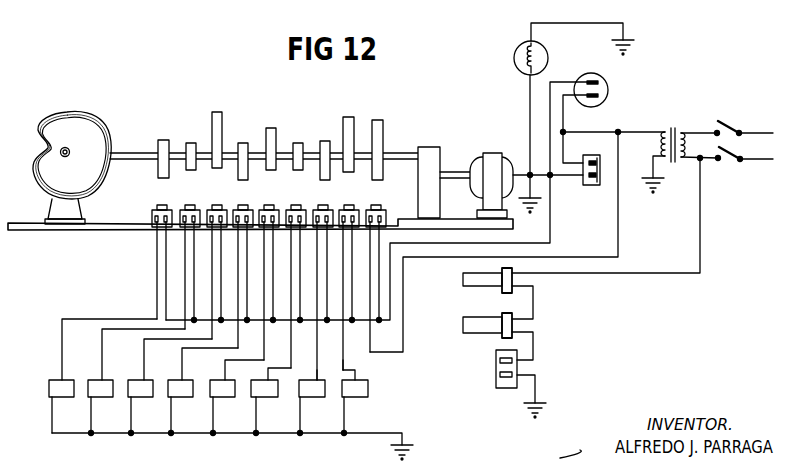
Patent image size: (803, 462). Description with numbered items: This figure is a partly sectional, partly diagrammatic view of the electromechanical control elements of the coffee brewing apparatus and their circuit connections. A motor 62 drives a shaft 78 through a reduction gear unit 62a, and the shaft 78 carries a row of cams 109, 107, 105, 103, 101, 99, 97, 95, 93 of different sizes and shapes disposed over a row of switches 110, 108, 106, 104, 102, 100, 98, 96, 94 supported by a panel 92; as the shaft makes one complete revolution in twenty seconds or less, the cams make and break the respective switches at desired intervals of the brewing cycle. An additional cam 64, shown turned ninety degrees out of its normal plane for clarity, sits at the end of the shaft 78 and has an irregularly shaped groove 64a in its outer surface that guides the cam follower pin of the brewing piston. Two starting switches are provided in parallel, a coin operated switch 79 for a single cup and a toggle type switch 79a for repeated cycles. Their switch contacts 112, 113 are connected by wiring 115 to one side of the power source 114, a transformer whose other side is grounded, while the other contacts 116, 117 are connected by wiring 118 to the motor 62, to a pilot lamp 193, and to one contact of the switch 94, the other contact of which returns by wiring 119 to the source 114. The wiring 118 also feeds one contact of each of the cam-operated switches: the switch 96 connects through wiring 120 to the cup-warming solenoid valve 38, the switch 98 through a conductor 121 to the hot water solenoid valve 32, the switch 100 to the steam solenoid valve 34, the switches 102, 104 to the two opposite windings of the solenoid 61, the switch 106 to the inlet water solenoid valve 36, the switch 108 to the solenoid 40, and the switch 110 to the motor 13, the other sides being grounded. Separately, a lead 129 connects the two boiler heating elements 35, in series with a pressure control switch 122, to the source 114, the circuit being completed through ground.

The cam 64 is at (53, 128).
The irregularly shaped groove 64a is at (95, 132).
The shaft 78 is at (398, 157).
The panel 92 is at (20, 229).
The cam 109 is at (164, 140).
The cam 107 is at (199, 122).
The cam 105 is at (217, 112).
The cam 103 is at (245, 143).
The cam 101 is at (273, 128).
The cam 99 is at (297, 143).
The cam 97 is at (325, 141).
The cam 95 is at (348, 117).
The cam 93 is at (378, 122).
The switch 110 is at (163, 205).
The switch 108 is at (189, 205).
The switch 106 is at (213, 205).
The switch 104 is at (243, 205).
The switch 102 is at (270, 205).
The switch 100 is at (297, 205).
The switch 98 is at (323, 205).
The switch 96 is at (348, 205).
The switch 94 is at (375, 207).
The reduction gear unit 62a is at (430, 152).
The motor 62 is at (492, 160).
The pilot lamp 193 is at (547, 53).
The wiring 118 is at (550, 77).
The contact 116 is at (599, 80).
The switch 79 is at (608, 87).
The switch contact 112 is at (600, 97).
The wiring 115 is at (622, 129).
The power source 114 is at (672, 127).
The switch contact 113 is at (600, 150).
The contact 117 is at (588, 180).
The switch 79a is at (592, 187).
The wiring 119 is at (405, 322).
The lead 129 is at (700, 256).
The heating elements 35 is at (470, 282).
The pressure control switch 122 is at (498, 382).
The motor 13 is at (62, 388).
The solenoid 40 is at (102, 388).
The solenoid valve 36 is at (140, 388).
The solenoid 61 is at (180, 388).
The solenoid valve 34 is at (265, 390).
The solenoid valve 32 is at (312, 390).
The solenoid valve 38 is at (358, 390).
The conductor 121 is at (317, 365).
The wiring 120 is at (344, 362).